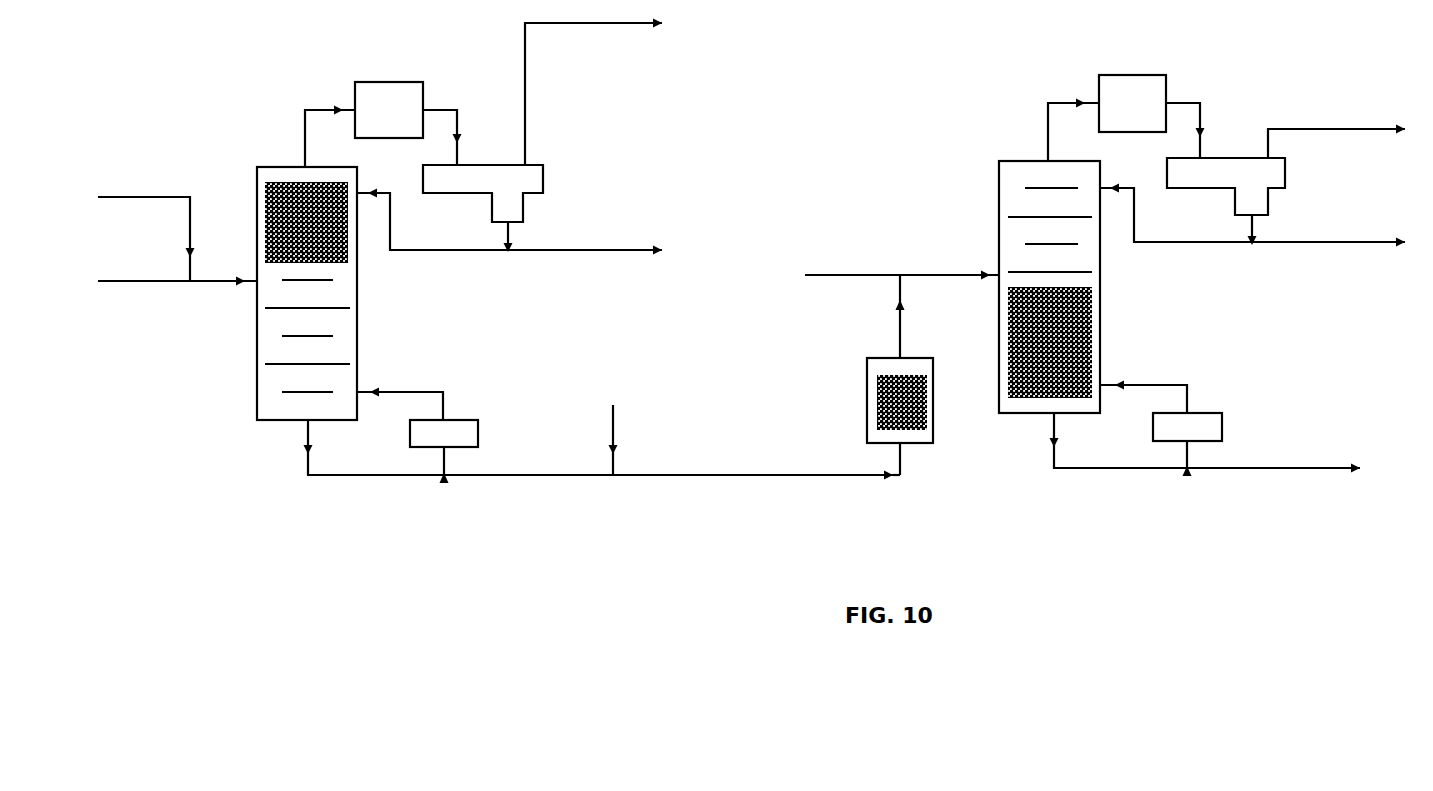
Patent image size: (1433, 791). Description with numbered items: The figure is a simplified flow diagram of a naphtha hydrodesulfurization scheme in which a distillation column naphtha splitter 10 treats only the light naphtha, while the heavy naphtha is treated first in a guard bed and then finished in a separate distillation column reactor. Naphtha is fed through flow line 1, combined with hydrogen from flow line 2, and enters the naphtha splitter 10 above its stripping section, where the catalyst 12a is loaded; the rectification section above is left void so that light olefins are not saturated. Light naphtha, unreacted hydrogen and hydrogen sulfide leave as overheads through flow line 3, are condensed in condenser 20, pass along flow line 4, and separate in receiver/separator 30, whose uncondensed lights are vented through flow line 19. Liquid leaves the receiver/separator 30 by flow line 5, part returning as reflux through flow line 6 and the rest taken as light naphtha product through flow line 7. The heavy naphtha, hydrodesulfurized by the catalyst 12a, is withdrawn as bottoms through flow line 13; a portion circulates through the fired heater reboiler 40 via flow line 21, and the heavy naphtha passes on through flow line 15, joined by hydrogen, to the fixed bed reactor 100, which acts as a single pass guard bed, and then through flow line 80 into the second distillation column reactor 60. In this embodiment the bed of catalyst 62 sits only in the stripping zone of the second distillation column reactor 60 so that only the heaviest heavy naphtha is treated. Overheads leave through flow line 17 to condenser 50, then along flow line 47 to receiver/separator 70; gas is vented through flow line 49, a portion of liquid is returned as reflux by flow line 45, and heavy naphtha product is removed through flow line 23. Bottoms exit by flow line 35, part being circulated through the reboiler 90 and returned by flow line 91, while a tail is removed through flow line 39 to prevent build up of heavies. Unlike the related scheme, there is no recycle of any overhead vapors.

The flow line 1 is at (132, 277).
The flow line 2 is at (135, 200).
The flow line 3 is at (305, 110).
The condensed overhead line 4 is at (462, 121).
The flow line 5 is at (505, 240).
The flow line 6 is at (443, 252).
The flow line 7 is at (627, 246).
The naphtha splitter 10 is at (270, 159).
The catalyst 12a is at (272, 205).
The flow line 13 is at (405, 478).
The flow line 15 is at (590, 474).
The flow line 17 is at (1048, 103).
The flow line 19 is at (531, 113).
The condenser 20 is at (389, 110).
The flow line 21 is at (445, 459).
The flow line 23 is at (1338, 243).
The receiver/separator 30 is at (530, 183).
The flow line 35 is at (1062, 442).
The flow line 39 is at (1227, 470).
The fired heater reboiler 40 is at (467, 430).
The flow line 45 is at (1175, 244).
The flow line 47 is at (1227, 117).
The flow line 49 is at (1362, 129).
The condenser 50 is at (1132, 103).
The second distillation column reactor 60 is at (1020, 160).
The catalyst bed 62 is at (1018, 308).
The receiver/separator 70 is at (1267, 175).
The fired heater 80 is at (803, 474).
The knock out pot 90 is at (1205, 427).
The reboiler return line of second column 91 is at (1188, 386).
The fixed bed reactor 100 is at (865, 397).